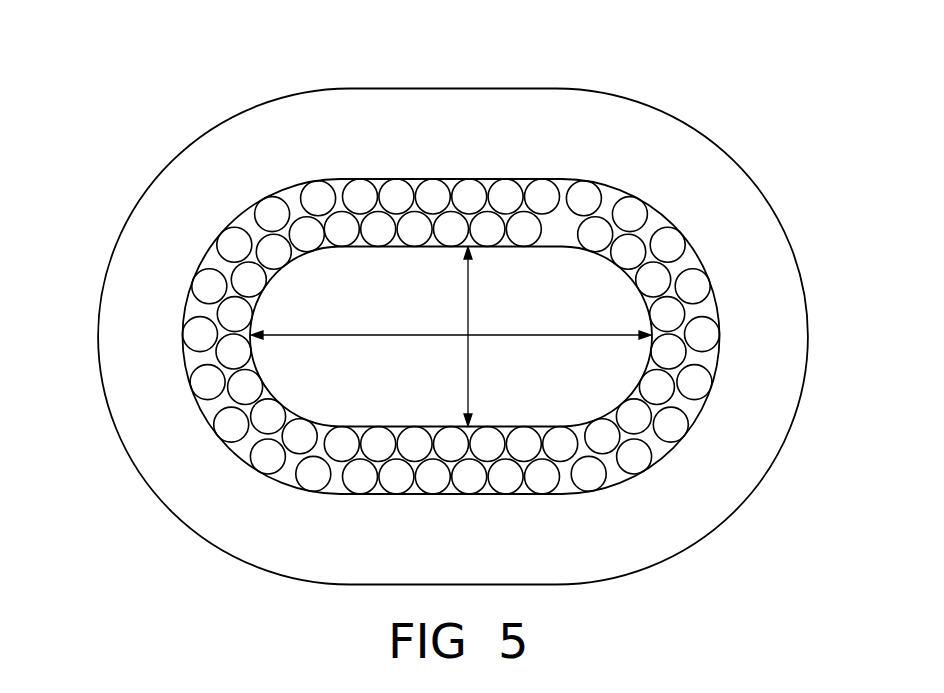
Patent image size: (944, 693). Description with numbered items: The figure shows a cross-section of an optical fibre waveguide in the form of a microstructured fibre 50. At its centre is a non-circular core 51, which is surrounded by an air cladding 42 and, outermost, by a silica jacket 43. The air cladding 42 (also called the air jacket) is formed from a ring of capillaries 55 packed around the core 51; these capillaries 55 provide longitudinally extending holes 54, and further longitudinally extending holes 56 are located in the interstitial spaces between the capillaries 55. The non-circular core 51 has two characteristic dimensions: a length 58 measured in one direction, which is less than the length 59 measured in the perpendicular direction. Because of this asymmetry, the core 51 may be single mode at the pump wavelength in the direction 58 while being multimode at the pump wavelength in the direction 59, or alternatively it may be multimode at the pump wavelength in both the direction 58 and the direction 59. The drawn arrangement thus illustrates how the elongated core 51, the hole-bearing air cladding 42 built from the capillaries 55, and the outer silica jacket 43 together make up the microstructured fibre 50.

The microstructured fibre 50 is at (454, 312).
The non-circular core 51 is at (313, 283).
The air cladding 42 is at (683, 268).
The silica jacket 43 is at (780, 333).
The longitudinally extending holes 54 is at (542, 193).
The capillaries 55 is at (577, 420).
The longitudinally extending holes 56 is at (197, 357).
The length 58 is at (468, 298).
The length 59 is at (365, 335).